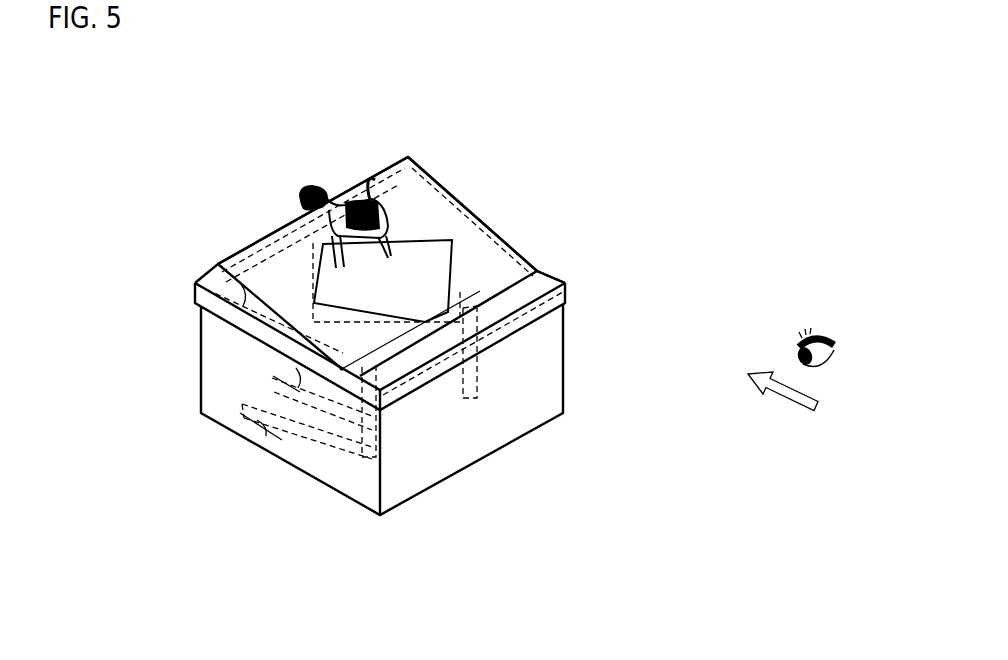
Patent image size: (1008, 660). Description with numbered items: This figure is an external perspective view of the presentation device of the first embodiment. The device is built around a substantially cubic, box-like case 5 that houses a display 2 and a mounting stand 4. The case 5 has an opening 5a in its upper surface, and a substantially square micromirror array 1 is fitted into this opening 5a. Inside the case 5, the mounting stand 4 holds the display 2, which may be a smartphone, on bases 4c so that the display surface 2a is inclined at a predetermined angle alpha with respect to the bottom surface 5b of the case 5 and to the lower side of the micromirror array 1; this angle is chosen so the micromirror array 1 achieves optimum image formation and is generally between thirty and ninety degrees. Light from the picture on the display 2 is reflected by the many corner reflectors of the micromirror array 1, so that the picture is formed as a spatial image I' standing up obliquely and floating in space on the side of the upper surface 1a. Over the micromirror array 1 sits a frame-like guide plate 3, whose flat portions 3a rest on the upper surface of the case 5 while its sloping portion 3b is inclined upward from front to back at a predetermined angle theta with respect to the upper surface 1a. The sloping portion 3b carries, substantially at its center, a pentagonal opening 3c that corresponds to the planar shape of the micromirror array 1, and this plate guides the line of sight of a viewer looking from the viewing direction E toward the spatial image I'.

The micromirror array 1 is at (418, 260).
The upper surface 1a is at (434, 256).
The display 2 is at (232, 422).
The display surface 2a is at (273, 382).
The guide plate 3 is at (513, 238).
The flat portions 3a is at (524, 285).
The sloping portion 3b is at (405, 190).
The opening 3c is at (327, 279).
The mounting stand 4 is at (485, 365).
The bases 4c is at (447, 383).
The case 5 is at (500, 467).
The opening 5a is at (257, 237).
The bottom surface 5b is at (460, 427).
The spatial image I' is at (345, 190).
The viewing direction E is at (791, 386).